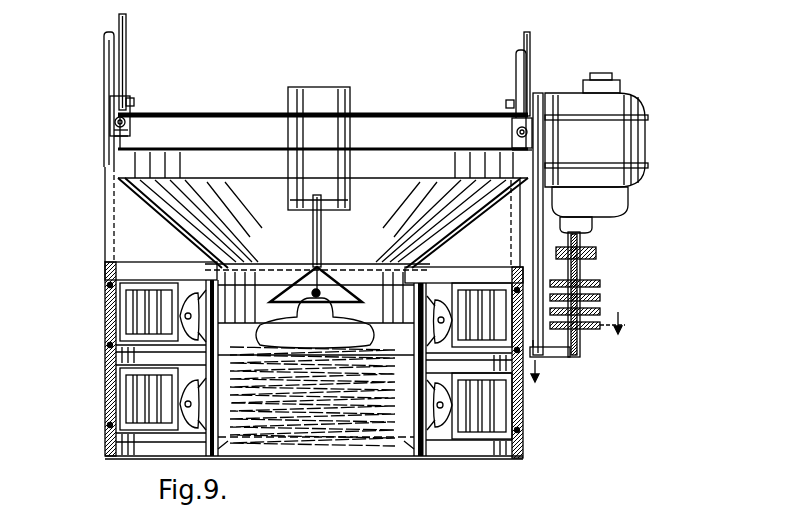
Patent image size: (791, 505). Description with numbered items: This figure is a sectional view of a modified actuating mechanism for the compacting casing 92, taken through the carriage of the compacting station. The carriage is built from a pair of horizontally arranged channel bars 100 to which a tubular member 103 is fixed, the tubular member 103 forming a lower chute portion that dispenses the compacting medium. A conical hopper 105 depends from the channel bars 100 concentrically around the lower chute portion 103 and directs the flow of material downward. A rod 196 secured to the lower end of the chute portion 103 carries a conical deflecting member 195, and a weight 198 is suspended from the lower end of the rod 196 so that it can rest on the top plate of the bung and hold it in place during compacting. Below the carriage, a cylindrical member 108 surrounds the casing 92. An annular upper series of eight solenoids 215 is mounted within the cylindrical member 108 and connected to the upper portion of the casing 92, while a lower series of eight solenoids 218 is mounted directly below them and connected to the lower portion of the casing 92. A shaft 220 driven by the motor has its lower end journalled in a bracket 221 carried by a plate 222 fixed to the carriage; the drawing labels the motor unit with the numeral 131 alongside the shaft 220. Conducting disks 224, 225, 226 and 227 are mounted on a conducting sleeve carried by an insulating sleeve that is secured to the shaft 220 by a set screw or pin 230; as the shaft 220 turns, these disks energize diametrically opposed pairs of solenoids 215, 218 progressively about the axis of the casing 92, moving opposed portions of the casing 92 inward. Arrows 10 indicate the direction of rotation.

The direction arrow 10 is at (578, 355).
The compacting casing 92 is at (424, 448).
The channel bar 100 is at (323, 132).
The tubular member 103 is at (350, 160).
The conical hopper 105 is at (178, 227).
The cylindrical member 108 is at (523, 413).
The aperture 131 is at (596, 153).
The conical deflecting member 195 is at (333, 280).
The rod 196 is at (321, 231).
The weight 198 is at (315, 323).
The solenoid 215 is at (125, 310).
The solenoid 218 is at (125, 398).
The shaft 220 is at (581, 356).
The bracket 221 is at (548, 358).
The plate 222 is at (536, 232).
The conducting disk 224 is at (596, 281).
The conducting disk 225 is at (600, 296).
The conducting disk 226 is at (600, 310).
The conducting disk 227 is at (627, 323).
The set screw or pin 230 is at (590, 262).